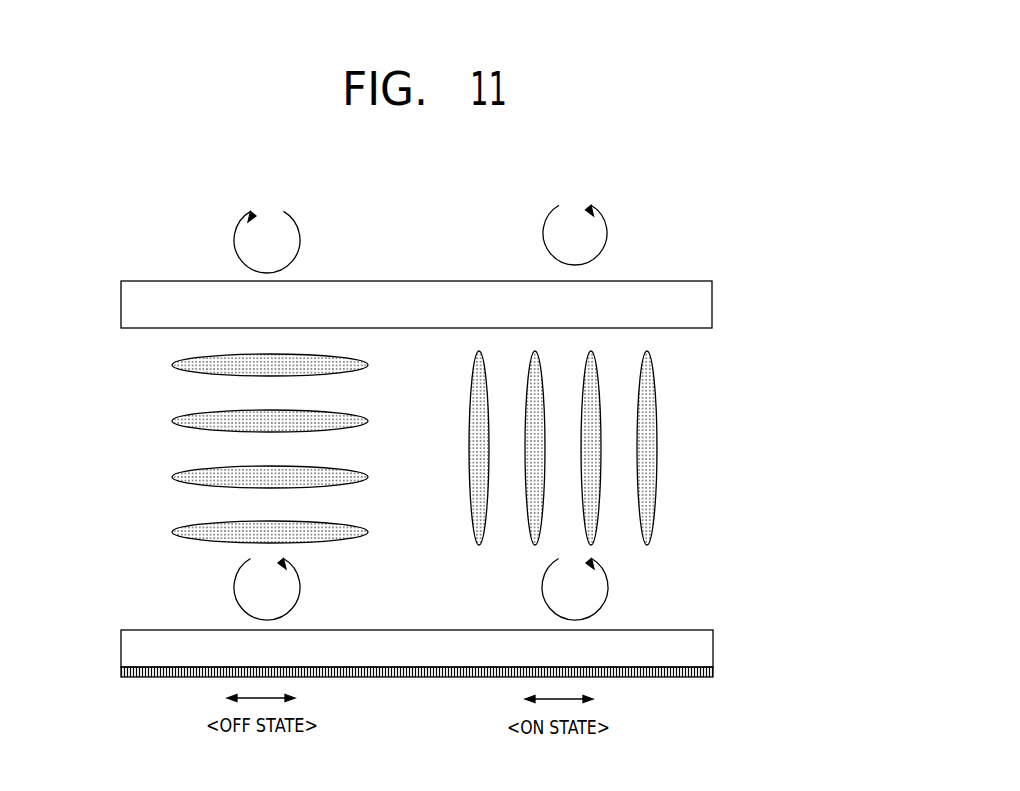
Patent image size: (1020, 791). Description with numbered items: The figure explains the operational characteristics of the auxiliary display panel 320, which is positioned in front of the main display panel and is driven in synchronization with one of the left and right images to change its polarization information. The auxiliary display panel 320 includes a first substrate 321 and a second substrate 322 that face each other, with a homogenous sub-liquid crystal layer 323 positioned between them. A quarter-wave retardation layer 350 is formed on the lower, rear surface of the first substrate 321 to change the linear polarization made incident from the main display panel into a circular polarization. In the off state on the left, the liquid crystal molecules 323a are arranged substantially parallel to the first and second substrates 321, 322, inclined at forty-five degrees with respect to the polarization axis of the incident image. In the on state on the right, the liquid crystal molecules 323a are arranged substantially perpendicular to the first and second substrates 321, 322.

The auxiliary display panel 320 is at (713, 252).
The second substrate 322 is at (703, 305).
The first substrate 321 is at (705, 647).
The λ/4 retardation layer 350 is at (705, 672).
The sub-liquid crystal layer 323 is at (714, 332).
The liquid crystal molecules 323a is at (647, 545).